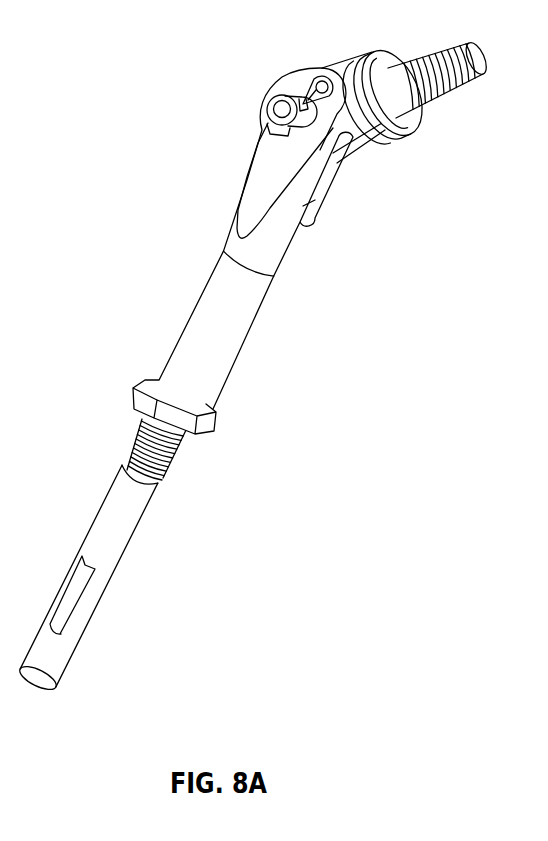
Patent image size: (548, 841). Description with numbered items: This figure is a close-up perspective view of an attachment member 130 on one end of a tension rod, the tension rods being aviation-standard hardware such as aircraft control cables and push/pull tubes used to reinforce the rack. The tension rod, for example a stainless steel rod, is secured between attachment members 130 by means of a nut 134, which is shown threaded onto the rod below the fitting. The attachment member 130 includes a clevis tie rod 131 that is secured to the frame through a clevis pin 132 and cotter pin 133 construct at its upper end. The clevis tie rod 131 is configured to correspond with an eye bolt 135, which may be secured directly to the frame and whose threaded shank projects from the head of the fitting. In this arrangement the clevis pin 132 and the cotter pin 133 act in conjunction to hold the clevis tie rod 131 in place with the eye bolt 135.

The attachment member 130 is at (136, 266).
The clevis tie rod 131 is at (291, 242).
The clevis pin 132 is at (269, 100).
The cotter pin 133 is at (318, 76).
The nut 134 is at (216, 431).
The eye bolt 135 is at (395, 136).